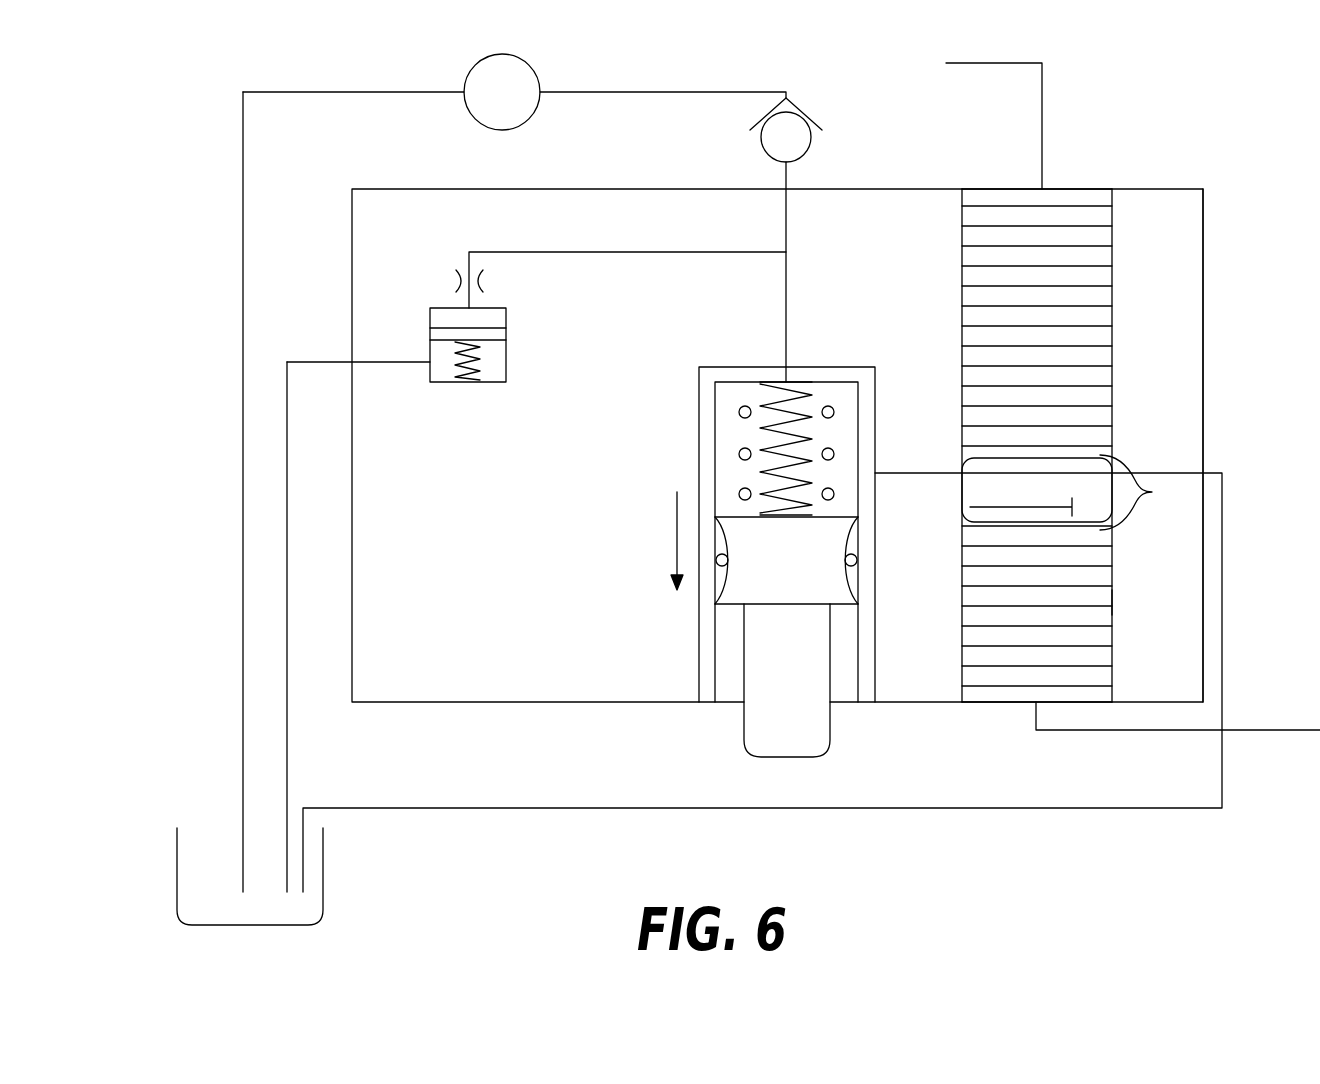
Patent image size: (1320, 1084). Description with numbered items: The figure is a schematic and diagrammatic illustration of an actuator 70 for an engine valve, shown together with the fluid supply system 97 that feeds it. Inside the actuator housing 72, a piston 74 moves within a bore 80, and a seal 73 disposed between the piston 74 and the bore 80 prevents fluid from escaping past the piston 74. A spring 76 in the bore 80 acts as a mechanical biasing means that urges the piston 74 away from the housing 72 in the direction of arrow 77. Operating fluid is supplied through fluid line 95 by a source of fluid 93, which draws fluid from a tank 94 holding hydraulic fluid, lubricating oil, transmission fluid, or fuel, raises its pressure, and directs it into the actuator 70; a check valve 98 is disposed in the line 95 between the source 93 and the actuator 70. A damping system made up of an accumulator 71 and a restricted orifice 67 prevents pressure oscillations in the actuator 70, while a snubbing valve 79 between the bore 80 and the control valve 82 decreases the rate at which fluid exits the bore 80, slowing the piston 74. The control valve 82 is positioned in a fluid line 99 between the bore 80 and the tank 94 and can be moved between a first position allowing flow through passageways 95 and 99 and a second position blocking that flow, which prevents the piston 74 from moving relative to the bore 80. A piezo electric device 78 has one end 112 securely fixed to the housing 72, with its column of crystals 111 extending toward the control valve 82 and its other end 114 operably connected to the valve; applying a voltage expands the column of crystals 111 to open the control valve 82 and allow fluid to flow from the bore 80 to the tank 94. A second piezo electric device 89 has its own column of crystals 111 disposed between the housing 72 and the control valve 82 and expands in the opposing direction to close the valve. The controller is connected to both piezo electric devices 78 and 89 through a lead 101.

The restricted orifice 67 is at (486, 280).
The actuator 70 is at (1205, 325).
The accumulator 71 is at (467, 385).
The housing 72 is at (880, 205).
The seal 73 is at (858, 557).
The piston 74 is at (787, 680).
The spring 76 is at (813, 402).
The arrow 77 is at (672, 545).
The piezo electric device 78 is at (1112, 278).
The snubbing valve 79 is at (739, 492).
The bore 80 is at (712, 645).
The control valve 82 is at (1037, 490).
The second piezo electric device 89 is at (1115, 600).
The source of fluid 93 is at (502, 92).
The tank 94 is at (323, 873).
The fluid line 95 is at (708, 90).
The fluid supply system 97 is at (152, 138).
The check valve 98 is at (758, 140).
The fluid line 99 is at (1050, 806).
The lead 101 is at (1043, 122).
The column of crystals 111 is at (1082, 318).
The fixed end 112 is at (1094, 190).
The other end 114 is at (1146, 492).